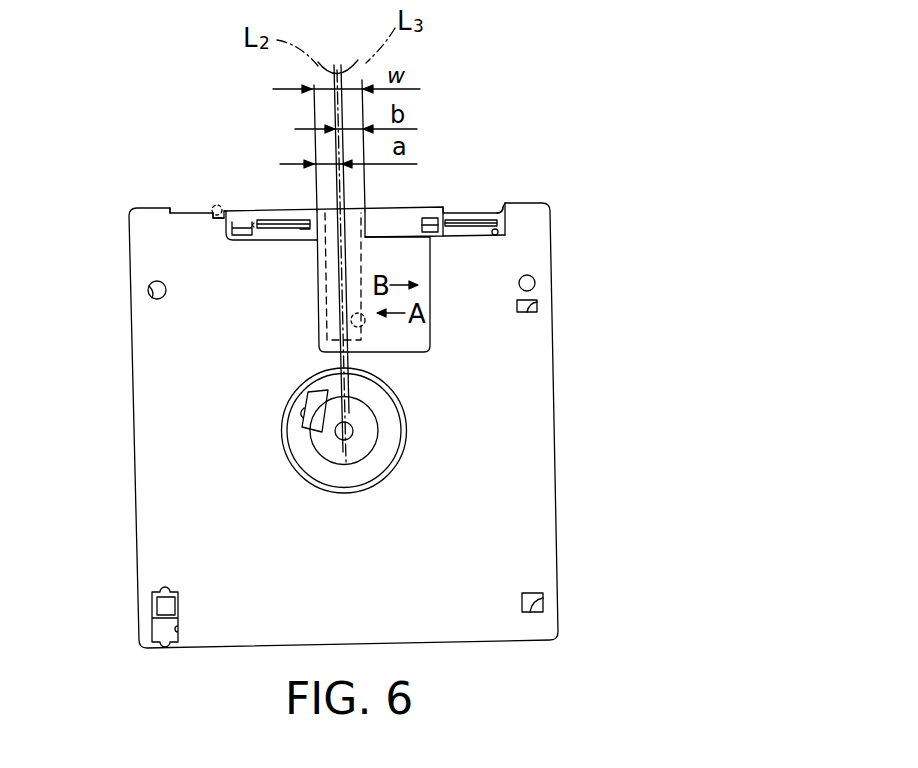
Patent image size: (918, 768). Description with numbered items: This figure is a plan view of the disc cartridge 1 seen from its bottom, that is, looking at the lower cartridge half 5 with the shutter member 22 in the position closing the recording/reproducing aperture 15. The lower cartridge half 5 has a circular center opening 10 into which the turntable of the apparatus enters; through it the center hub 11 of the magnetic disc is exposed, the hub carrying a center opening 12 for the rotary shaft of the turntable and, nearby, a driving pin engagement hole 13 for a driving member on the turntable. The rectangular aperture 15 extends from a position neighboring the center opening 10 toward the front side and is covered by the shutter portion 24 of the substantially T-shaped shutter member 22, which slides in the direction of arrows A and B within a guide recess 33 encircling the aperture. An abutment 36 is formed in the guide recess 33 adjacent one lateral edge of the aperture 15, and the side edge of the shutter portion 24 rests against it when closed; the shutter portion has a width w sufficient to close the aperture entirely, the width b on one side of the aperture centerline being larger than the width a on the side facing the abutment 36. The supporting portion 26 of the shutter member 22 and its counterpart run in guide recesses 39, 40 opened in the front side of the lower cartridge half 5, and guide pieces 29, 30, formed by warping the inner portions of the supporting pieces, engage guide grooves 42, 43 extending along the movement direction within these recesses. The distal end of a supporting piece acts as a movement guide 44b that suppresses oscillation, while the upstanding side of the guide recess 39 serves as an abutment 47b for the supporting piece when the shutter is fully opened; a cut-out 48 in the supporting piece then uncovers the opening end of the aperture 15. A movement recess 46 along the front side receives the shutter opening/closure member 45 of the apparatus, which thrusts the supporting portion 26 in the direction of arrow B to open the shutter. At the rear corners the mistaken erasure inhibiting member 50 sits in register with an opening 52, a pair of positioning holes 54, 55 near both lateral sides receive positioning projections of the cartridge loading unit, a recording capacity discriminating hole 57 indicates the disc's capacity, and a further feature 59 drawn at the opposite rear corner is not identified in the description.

The disc cartridge 1 is at (571, 530).
The lower cartridge half 5 is at (540, 457).
The circular center opening 10 is at (393, 446).
The center hub 11 is at (342, 478).
The center opening 12 is at (335, 437).
The driving pin engagement hole 13 is at (300, 423).
The recording/reproducing aperture 15 is at (358, 312).
The shutter member 22 is at (478, 157).
The shutter portion 24 is at (372, 263).
The supporting portion 26 is at (229, 209).
The guide piece 29 is at (432, 217).
The guide piece 30 is at (238, 219).
The guide recess 33 is at (415, 338).
The abutment 36 is at (321, 309).
The guide recess 39 is at (495, 237).
The guide recess 40 is at (302, 238).
The guide groove 42 is at (468, 237).
The guide groove 43 is at (282, 230).
The movement guide 44b is at (230, 240).
The shutter opening/closure member 45 is at (217, 204).
The movement recess 46 is at (213, 214).
The abutment 47b is at (503, 207).
The cut-out 48 is at (279, 219).
The mistaken erasure inhibiting member 50 is at (170, 614).
The opening 52 is at (175, 630).
The positioning hole 54 is at (535, 282).
The positioning hole 55 is at (146, 289).
The recording capacity discriminating hole 57 is at (540, 306).
The detection hole 59 is at (530, 610).